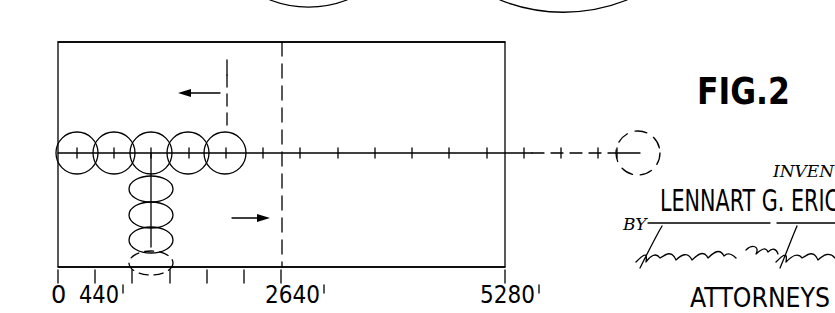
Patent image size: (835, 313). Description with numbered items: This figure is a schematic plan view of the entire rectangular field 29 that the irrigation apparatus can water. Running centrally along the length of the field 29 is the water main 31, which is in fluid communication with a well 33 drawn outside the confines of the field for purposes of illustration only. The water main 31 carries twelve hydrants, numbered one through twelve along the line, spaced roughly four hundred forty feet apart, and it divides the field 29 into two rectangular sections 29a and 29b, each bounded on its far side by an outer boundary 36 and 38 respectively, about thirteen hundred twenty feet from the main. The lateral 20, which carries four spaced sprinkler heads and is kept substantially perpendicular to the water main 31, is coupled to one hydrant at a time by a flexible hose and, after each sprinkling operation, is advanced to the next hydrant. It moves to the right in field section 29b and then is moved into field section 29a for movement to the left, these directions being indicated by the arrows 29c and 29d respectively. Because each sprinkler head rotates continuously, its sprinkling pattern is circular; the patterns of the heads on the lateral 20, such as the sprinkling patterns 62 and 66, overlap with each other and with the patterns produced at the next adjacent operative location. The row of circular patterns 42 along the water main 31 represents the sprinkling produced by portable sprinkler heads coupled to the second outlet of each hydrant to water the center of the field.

The lateral 20 is at (229, 66).
The rectangular field 29 is at (388, 55).
The field section 29a is at (490, 75).
The field section 29b is at (490, 193).
The arrow 29c is at (250, 215).
The arrow 29d is at (203, 93).
The water main 31 is at (358, 153).
The well 33 is at (630, 133).
The outer boundary 36 is at (146, 42).
The outer boundary 38 is at (390, 267).
The circular pattern 42 is at (138, 131).
The sprinkling pattern 62 is at (130, 189).
The sprinkling pattern 66 is at (129, 228).